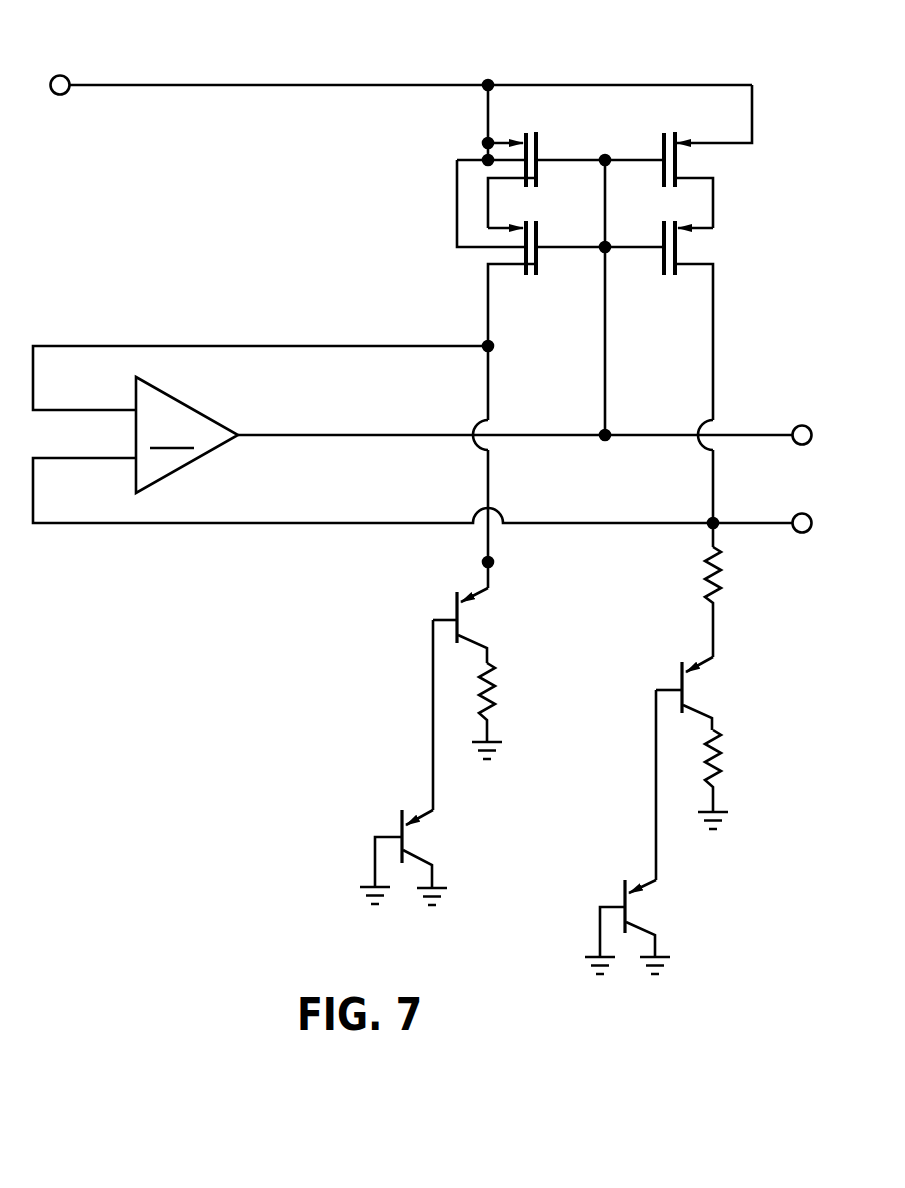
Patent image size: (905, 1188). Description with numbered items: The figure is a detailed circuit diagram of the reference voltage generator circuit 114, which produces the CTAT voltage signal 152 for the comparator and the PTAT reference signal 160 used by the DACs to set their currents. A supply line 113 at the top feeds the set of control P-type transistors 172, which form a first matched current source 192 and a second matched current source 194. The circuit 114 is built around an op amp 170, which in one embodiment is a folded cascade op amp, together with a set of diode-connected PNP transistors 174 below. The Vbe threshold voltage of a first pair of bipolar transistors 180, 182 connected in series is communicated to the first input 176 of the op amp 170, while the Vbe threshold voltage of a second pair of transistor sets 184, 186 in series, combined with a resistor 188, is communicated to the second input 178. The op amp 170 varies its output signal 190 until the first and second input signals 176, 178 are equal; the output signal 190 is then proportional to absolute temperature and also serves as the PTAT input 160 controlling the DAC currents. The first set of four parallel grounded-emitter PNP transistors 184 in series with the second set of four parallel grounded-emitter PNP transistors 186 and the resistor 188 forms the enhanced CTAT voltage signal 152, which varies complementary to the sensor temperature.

The supply input line 113 is at (158, 85).
The set of control P-type transistors 172 is at (598, 114).
The first matched current source 192 is at (446, 203).
The second matched current source 194 is at (721, 202).
The first input 176 is at (117, 410).
The second input 178 is at (117, 458).
The op amp 170 is at (187, 435).
The output signal 190 is at (290, 434).
The PTAT reference signal 160 is at (749, 432).
The CTAT voltage signal 152 is at (752, 528).
The resistor 188 is at (698, 567).
The reference voltage generator circuit 114 is at (176, 734).
The set of diode-connected PNP transistors 174 is at (535, 941).
The bipolar transistor 180 is at (504, 618).
The bipolar transistor 182 is at (441, 838).
The second set of four parallel grounded emitter PNP transistors 186 is at (748, 680).
The first set of four parallel grounded emitter PNP transistors 184 is at (693, 898).